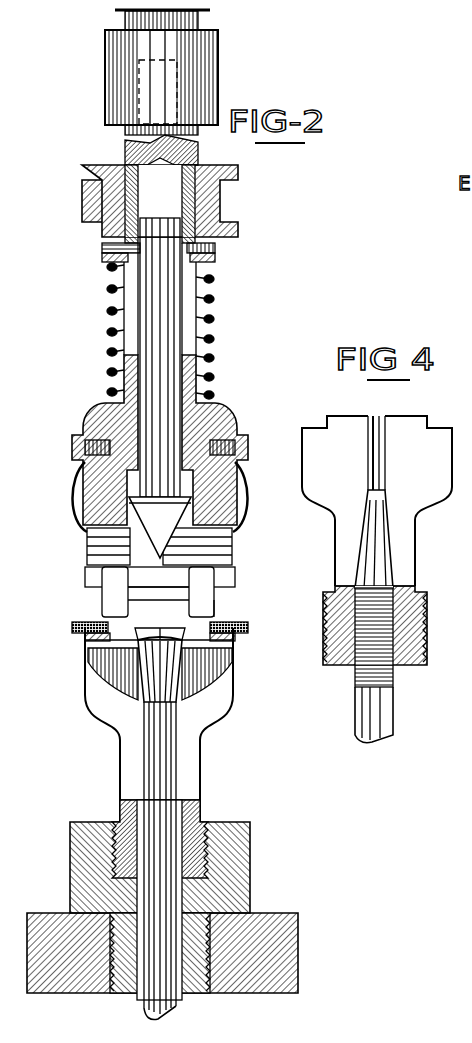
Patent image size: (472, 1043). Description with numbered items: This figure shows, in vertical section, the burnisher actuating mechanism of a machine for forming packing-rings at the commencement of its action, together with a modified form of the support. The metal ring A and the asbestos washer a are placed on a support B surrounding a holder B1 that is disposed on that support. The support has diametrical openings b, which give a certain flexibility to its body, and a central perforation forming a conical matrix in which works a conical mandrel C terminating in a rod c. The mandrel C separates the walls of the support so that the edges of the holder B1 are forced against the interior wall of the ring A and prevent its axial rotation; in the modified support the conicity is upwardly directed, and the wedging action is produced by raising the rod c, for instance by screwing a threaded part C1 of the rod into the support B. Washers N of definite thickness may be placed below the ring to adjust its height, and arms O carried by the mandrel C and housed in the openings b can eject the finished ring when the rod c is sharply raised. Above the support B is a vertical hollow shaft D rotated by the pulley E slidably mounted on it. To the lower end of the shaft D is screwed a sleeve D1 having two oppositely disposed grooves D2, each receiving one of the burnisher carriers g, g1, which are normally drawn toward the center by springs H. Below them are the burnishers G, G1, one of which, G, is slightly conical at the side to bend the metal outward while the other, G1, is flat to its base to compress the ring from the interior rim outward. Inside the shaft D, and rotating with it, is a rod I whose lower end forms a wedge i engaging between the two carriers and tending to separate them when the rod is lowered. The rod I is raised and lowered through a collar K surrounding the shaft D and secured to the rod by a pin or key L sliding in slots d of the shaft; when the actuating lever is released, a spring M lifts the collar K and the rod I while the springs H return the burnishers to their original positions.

In FIG. 2, the pulley E is at (161, 72).
In FIG. 2, the collar K is at (102, 196).
In FIG. 2, the pin or key L is at (103, 250).
In FIG. 2, the slots d is at (131, 290).
In FIG. 2, the rod I is at (162, 298).
In FIG. 2, the spring M is at (108, 350).
In FIG. 2, the vertical hollow shaft D is at (197, 372).
In FIG. 2, the sleeve D1 is at (100, 495).
In FIG. 2, the springs H is at (242, 487).
In FIG. 2, the burnisher carrier g is at (90, 545).
In FIG. 2, the burnisher carrier g1 is at (205, 548).
In FIG. 2, the wedge i is at (160, 527).
In FIG. 2, the grooves D2 is at (288, 576).
In FIG. 2, the burnisher G is at (118, 592).
In FIG. 2, the burnisher G1 is at (200, 595).
In FIG. 2, the holder B1 is at (230, 608).
In FIG. 4, the holder B1 is at (405, 426).
In FIG. 2, the metal ring A is at (105, 622).
In FIG. 2, the asbestos washer a is at (87, 637).
In FIG. 2, the washers N is at (234, 638).
In FIG. 2, the arms O is at (105, 658).
In FIG. 2, the conical mandrel C is at (157, 680).
In FIG. 4, the conical mandrel C is at (372, 533).
In FIG. 2, the rod c is at (152, 996).
In FIG. 4, the rod c is at (362, 700).
In FIG. 2, the support B is at (115, 818).
In FIG. 4, the support B is at (420, 636).
In FIG. 4, the diametrical openings b is at (374, 447).
In FIG. 4, the threaded part C1 is at (408, 584).